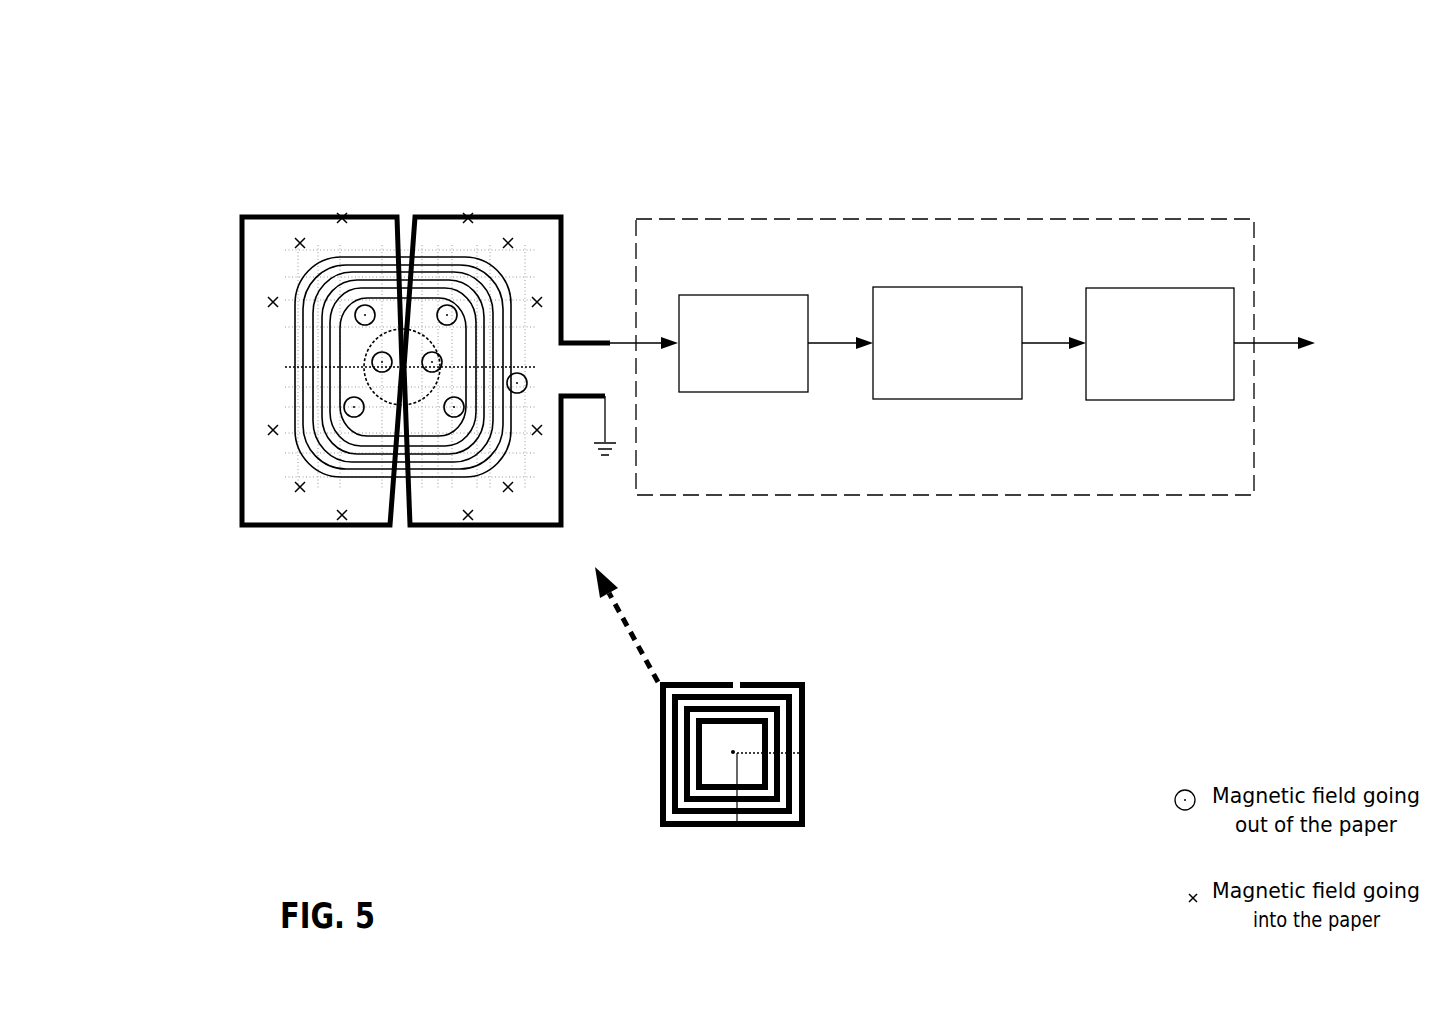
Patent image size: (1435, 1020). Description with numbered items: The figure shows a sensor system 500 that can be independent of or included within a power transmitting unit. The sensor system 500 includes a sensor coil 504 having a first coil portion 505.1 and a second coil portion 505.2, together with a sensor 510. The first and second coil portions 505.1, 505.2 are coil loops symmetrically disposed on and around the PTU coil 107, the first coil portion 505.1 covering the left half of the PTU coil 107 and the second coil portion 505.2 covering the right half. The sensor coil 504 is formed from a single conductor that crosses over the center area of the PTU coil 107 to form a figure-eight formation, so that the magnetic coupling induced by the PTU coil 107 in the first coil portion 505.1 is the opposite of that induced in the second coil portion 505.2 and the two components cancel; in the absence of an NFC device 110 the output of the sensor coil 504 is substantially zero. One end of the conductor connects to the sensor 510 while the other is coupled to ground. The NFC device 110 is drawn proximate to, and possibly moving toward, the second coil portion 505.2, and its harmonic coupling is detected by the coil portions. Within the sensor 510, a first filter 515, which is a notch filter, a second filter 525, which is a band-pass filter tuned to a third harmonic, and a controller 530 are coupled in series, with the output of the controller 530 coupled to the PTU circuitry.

The sensor system 500 is at (1357, 119).
The sensor coil 504 is at (201, 187).
The first coil portion 505.1 is at (242, 383).
The second coil portion 505.2 is at (503, 527).
The PTU coil 107 is at (411, 353).
The NFC device 110 is at (806, 766).
The sensor 510 is at (1042, 254).
The first filter 515 is at (775, 354).
The second filter 525 is at (947, 343).
The controller 530 is at (1222, 354).